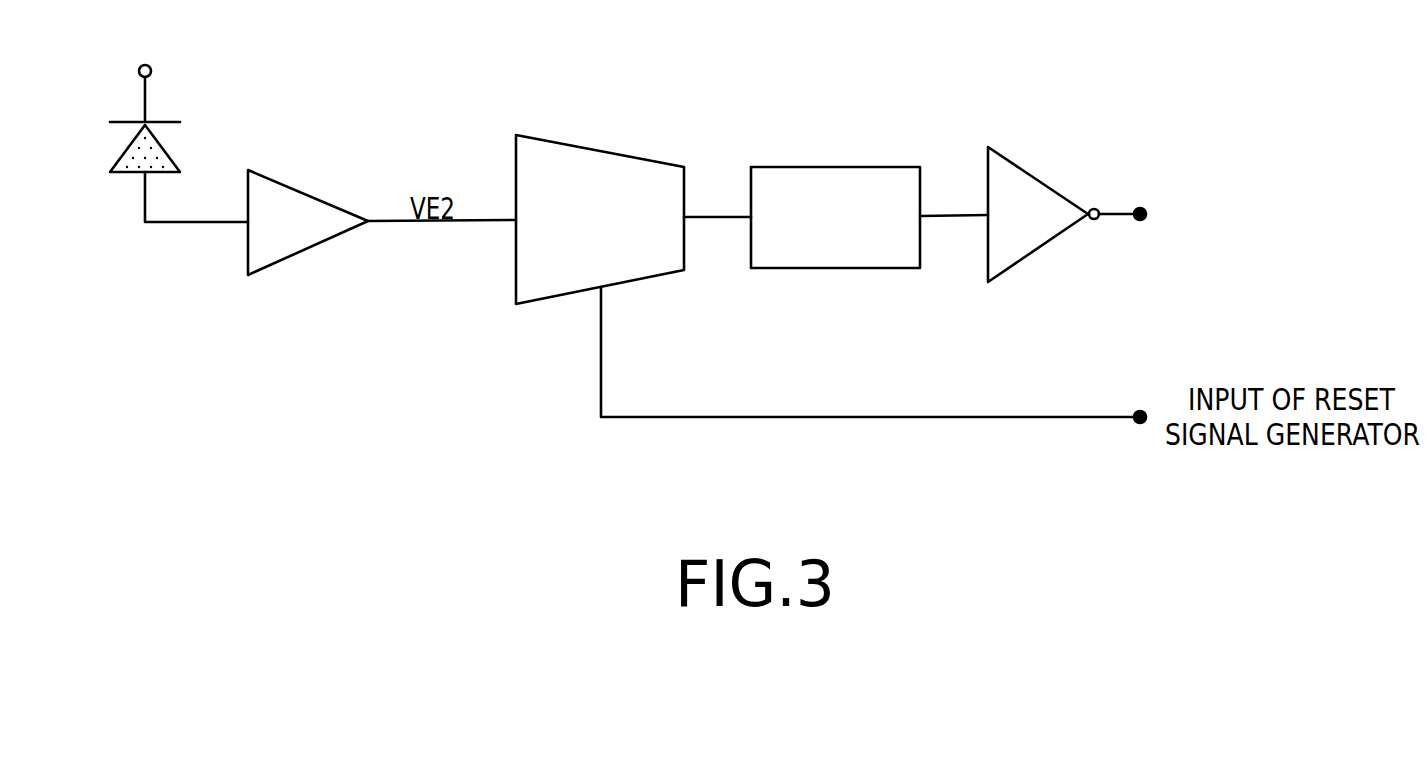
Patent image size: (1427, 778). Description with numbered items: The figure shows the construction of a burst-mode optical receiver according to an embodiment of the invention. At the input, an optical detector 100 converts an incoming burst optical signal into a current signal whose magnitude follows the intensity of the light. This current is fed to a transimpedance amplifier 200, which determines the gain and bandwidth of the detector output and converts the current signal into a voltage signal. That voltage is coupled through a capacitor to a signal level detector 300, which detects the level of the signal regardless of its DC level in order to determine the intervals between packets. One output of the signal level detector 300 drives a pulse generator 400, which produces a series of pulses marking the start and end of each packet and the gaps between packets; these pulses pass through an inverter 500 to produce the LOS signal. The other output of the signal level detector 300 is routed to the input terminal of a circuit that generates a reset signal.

The optical detector 100 is at (125, 156).
The transimpedance amplifier (TIA) 200 is at (298, 188).
The signal level detector 300 is at (600, 148).
The pulse generator 400 is at (817, 166).
The inverter 500 is at (1065, 157).